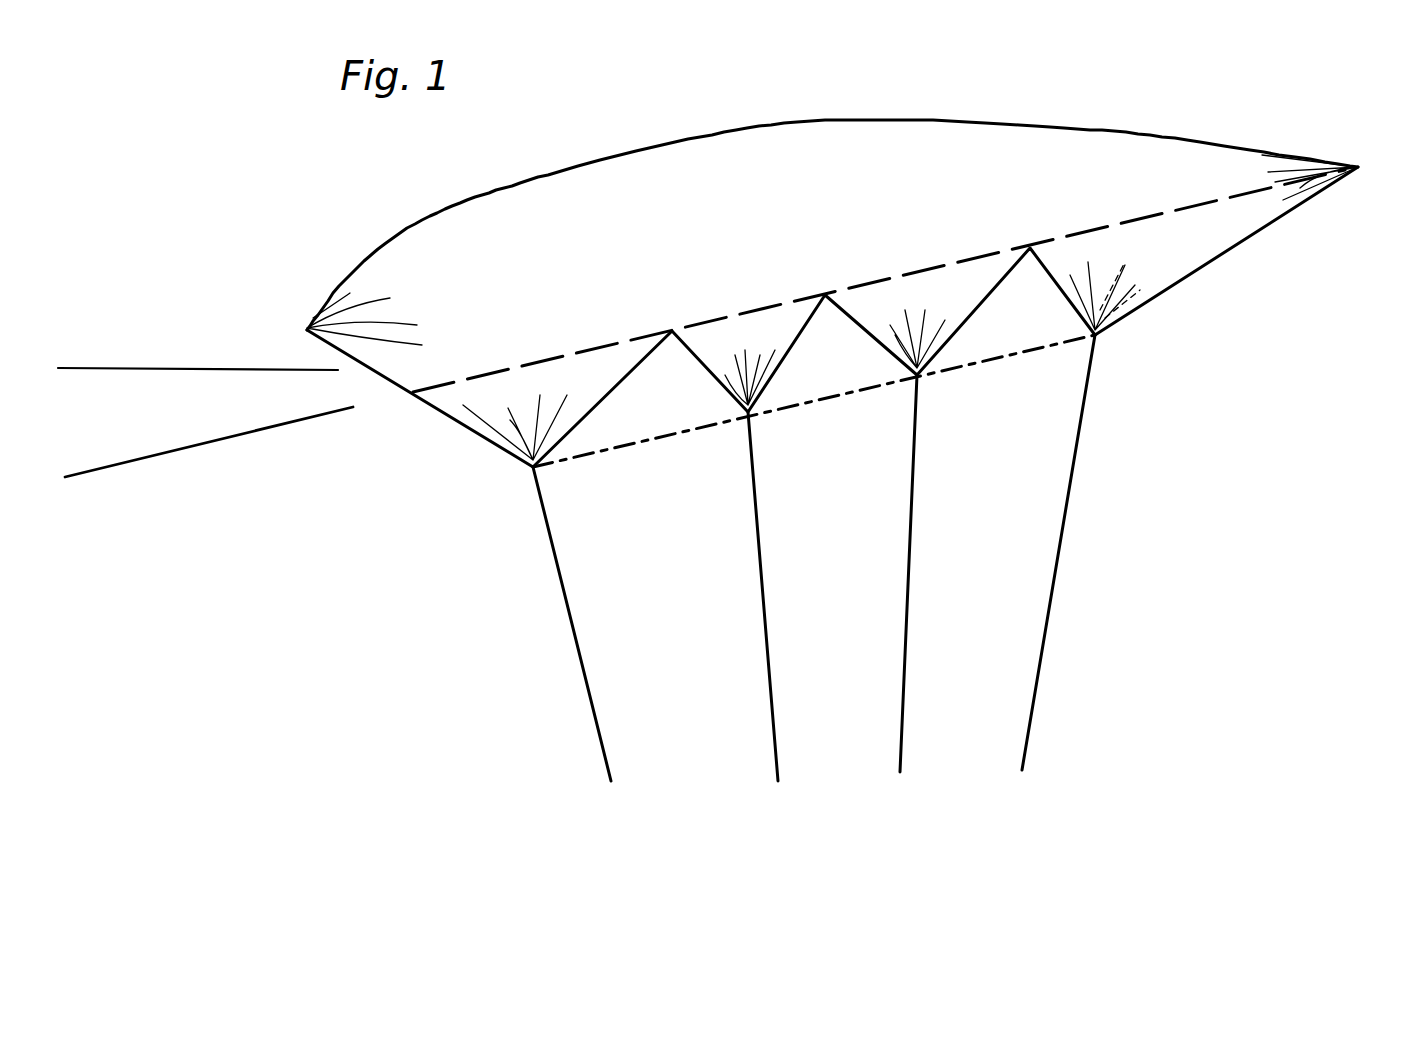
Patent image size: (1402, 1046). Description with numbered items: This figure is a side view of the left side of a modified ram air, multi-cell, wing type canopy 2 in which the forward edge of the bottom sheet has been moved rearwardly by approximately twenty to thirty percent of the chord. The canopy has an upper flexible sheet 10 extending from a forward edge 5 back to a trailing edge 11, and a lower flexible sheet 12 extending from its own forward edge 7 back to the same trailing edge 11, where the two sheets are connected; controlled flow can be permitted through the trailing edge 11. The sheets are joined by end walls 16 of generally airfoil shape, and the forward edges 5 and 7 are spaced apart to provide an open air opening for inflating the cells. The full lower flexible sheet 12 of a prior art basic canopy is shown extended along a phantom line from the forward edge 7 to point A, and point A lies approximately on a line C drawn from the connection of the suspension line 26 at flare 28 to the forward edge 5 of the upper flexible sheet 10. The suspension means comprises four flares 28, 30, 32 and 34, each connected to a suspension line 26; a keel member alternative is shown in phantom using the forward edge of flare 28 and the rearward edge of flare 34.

The ram air, multi-cell, wing type canopy 2 is at (402, 233).
The forward edge of upper flexible sheet 5 is at (305, 329).
The forward edge of lower flexible sheet 7 is at (672, 331).
The upper flexible sheet 10 is at (797, 122).
The trailing edge 11 is at (1358, 165).
The lower flexible sheet 12 is at (895, 278).
The end wall 16 is at (762, 230).
The suspension line 26 is at (568, 608).
The flare 28 is at (520, 440).
The flare 30 is at (735, 385).
The flare 32 is at (915, 333).
The flare 34 is at (1087, 308).
The point A is at (413, 392).
The line C is at (387, 378).